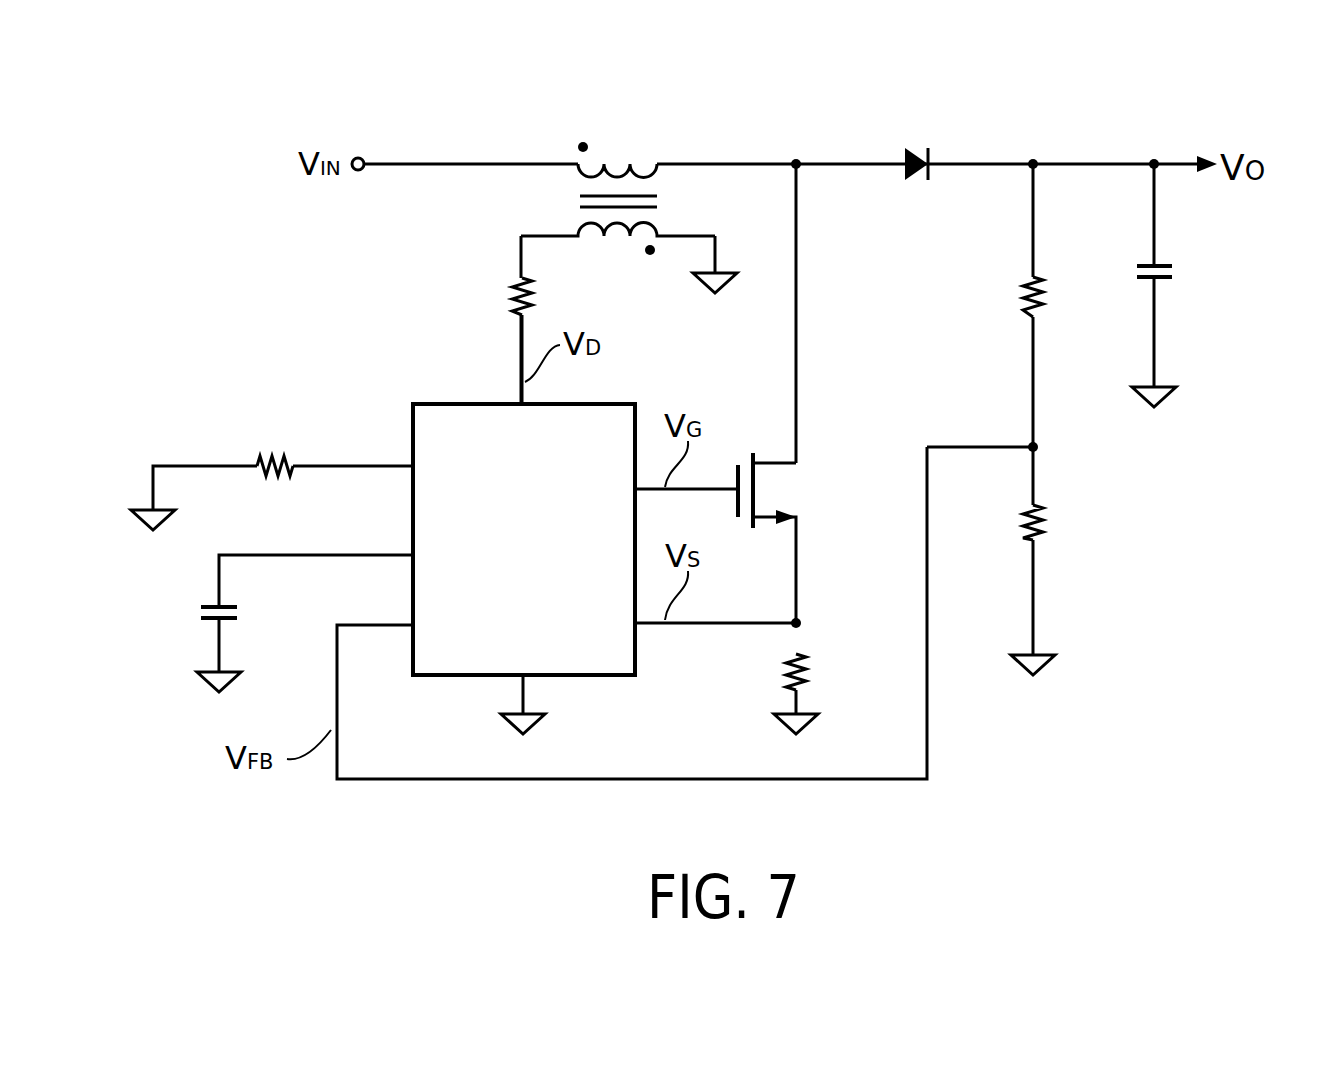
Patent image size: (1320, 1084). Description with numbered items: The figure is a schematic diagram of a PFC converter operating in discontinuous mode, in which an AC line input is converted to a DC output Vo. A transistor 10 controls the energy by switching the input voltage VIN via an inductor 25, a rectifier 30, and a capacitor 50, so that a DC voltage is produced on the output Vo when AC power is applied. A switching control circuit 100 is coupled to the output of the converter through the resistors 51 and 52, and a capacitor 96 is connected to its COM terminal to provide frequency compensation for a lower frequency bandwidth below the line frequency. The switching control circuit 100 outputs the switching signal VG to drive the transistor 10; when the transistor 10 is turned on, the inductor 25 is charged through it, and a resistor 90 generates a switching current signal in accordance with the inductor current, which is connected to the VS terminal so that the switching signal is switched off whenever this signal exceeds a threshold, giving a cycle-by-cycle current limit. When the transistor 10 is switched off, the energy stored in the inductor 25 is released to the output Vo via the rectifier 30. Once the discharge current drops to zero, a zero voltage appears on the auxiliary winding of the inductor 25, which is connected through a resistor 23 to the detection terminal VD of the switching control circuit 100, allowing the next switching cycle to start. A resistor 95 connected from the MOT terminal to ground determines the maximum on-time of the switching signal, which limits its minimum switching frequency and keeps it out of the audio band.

The inductor 25 is at (625, 157).
The rectifier 30 is at (918, 150).
The resistor 23 is at (508, 295).
The switching control circuit 100 is at (617, 402).
The resistor 95 is at (272, 446).
The capacitor 96 is at (198, 613).
The transistor 10 is at (800, 487).
The resistor 90 is at (812, 672).
The resistor 51 is at (1018, 300).
The resistor 52 is at (1050, 525).
The capacitor 50 is at (1177, 272).